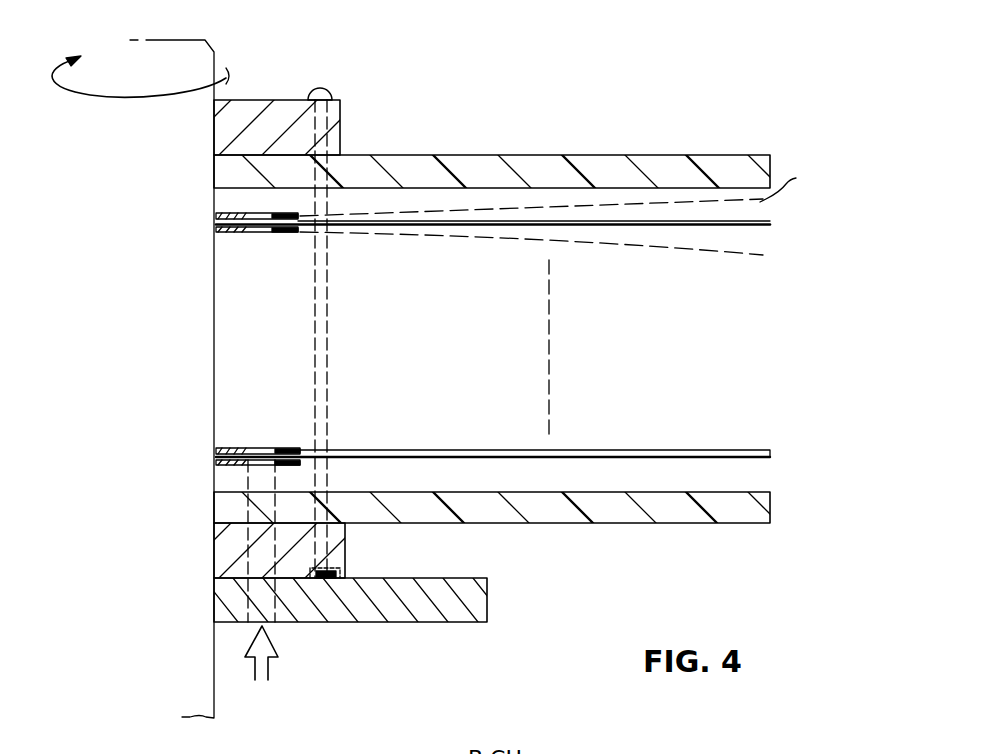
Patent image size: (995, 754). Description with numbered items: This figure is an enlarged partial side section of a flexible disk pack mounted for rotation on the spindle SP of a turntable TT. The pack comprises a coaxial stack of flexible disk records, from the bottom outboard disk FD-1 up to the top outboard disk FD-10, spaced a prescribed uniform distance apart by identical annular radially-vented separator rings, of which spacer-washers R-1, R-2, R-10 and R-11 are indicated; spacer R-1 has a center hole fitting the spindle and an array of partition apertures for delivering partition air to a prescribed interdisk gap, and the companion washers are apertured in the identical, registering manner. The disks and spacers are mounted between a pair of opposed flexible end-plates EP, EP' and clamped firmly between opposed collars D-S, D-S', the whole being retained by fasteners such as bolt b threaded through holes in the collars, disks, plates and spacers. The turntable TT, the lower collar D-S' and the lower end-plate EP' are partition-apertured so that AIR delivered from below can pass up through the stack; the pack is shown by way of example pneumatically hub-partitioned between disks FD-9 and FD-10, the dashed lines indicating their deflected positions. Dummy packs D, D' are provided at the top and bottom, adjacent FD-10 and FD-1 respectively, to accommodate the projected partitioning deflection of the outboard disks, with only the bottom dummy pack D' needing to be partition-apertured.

The spindle SP is at (216, 58).
The bolt b is at (323, 90).
The collar D-S is at (294, 127).
The end-plate EP is at (497, 152).
The spacer R-11 is at (216, 216).
The spacer R-10 is at (216, 229).
The dummy pack D is at (524, 205).
The flexible disk record FD-10 is at (770, 224).
The flexible disk record FD-9 is at (758, 254).
The spacer R-2 is at (216, 451).
The spacer-washer R-1 is at (216, 463).
The flexible disk record FD-1 is at (776, 453).
The dummy pack D' is at (802, 477).
The end-plate EP' is at (496, 527).
The collar D-S' is at (300, 550).
The turntable TT is at (488, 599).
The partition air AIR is at (260, 669).